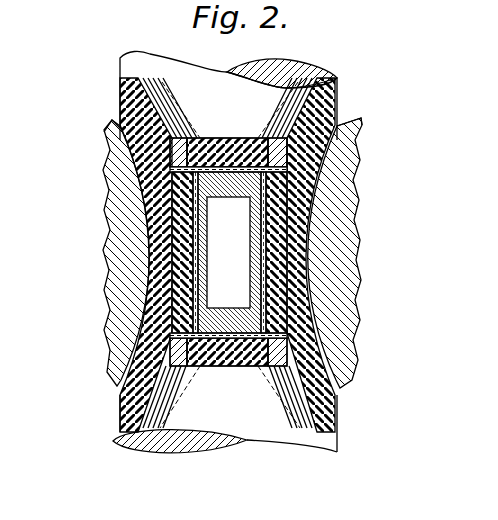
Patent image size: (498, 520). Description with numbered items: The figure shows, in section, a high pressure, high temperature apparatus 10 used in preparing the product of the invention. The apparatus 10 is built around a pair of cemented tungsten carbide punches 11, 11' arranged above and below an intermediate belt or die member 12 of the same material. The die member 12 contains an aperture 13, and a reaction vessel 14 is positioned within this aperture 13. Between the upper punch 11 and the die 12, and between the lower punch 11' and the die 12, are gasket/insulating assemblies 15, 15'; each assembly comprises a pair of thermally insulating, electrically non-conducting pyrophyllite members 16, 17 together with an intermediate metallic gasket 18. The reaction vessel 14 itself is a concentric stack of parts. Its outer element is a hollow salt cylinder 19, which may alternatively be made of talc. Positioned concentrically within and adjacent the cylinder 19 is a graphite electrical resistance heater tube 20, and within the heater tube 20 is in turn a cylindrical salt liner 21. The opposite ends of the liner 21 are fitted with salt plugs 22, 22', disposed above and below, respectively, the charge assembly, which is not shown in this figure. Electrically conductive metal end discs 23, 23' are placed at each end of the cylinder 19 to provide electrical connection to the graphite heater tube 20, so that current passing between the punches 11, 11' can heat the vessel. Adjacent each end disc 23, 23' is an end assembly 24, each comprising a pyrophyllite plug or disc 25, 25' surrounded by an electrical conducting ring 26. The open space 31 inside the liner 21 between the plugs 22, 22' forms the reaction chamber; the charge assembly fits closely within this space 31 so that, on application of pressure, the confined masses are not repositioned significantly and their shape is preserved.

The apparatus 10 is at (332, 50).
The punch 11 is at (227, 77).
The punch 11' is at (225, 426).
The belt or die member 12 is at (349, 141).
The aperture 13 is at (340, 110).
The reaction vessel 14 is at (130, 292).
The gasket/insulating assembly 15 is at (380, 441).
The gasket/insulating assembly 15' is at (86, 73).
The pyrophyllite member 16 is at (341, 433).
The pyrophyllite member 17 is at (337, 390).
The metallic gasket 18 is at (341, 410).
The hollow salt cylinder 19 is at (178, 191).
The graphite electrical resistance heater tube 20 is at (196, 227).
The cylindrical salt liner 21 is at (203, 264).
The salt plug 22 is at (228, 244).
The salt plug 22' is at (228, 300).
The electrically conductive metal end disc 23 is at (227, 133).
The electrically conductive metal end disc 23' is at (227, 370).
The end assembly 24 is at (203, 137).
The pyrophyllite plug or disc 25 is at (228, 138).
The pyrophyllite plug or disc 25' is at (228, 377).
The electrical conducting ring 26 is at (178, 137).
The space (reaction chamber) 31 is at (236, 264).